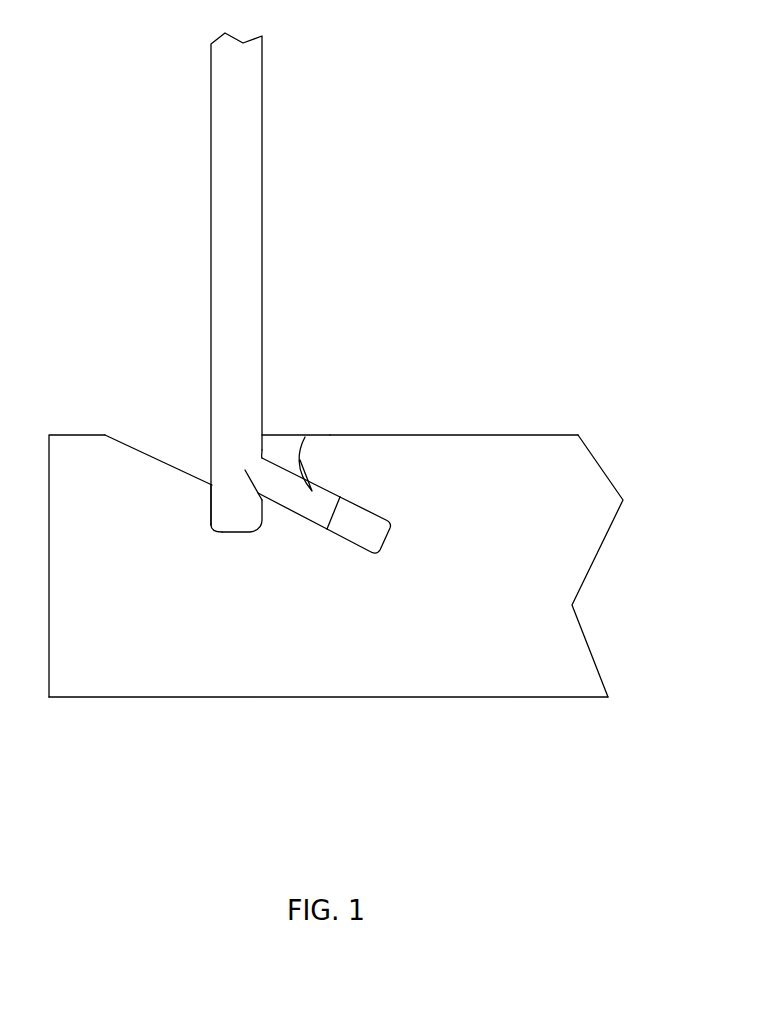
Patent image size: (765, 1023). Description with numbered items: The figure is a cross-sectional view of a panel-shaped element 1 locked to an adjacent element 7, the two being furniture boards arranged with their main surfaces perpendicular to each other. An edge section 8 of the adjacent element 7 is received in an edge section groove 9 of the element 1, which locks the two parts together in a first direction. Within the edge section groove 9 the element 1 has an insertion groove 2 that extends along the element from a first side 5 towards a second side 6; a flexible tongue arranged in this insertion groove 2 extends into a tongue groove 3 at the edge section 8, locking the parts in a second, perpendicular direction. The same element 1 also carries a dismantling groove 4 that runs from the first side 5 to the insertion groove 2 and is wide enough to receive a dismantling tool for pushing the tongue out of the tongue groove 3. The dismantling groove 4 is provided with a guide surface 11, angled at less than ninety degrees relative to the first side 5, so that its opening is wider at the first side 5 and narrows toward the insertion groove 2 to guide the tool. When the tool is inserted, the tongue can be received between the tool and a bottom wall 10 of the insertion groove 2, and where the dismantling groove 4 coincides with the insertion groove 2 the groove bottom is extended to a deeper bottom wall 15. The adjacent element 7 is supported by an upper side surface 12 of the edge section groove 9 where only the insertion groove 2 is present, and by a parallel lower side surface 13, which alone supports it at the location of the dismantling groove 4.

The element 1 is at (577, 473).
The insertion groove 2 is at (303, 515).
The tongue groove 3 is at (243, 470).
The dismantling groove 4 is at (280, 443).
The first side 5 is at (467, 435).
The second side 6 is at (433, 697).
The adjacent element 7 is at (225, 272).
The edge section 8 is at (222, 493).
The edge section groove 9 is at (213, 530).
The bottom wall 10 is at (350, 538).
The guide surface 11 is at (307, 437).
The upper side surface 12 is at (260, 452).
The lower side surface 13 is at (263, 508).
The deeper bottom wall 15 is at (387, 538).